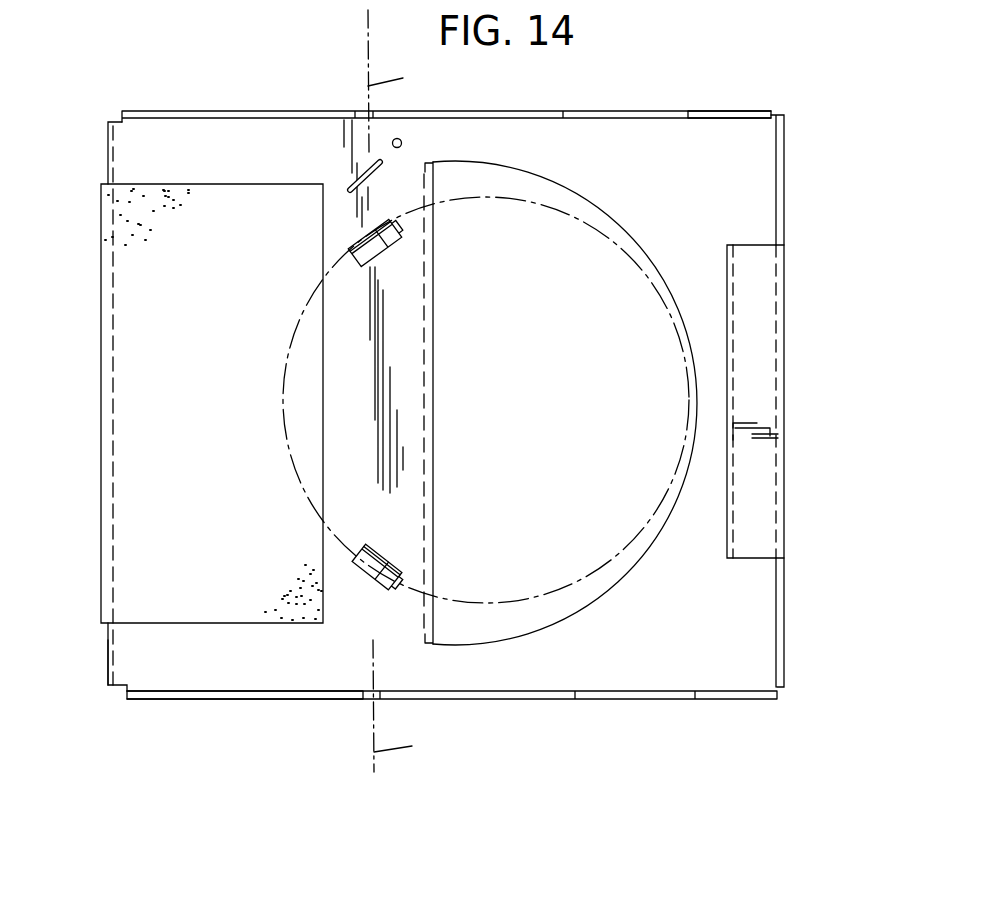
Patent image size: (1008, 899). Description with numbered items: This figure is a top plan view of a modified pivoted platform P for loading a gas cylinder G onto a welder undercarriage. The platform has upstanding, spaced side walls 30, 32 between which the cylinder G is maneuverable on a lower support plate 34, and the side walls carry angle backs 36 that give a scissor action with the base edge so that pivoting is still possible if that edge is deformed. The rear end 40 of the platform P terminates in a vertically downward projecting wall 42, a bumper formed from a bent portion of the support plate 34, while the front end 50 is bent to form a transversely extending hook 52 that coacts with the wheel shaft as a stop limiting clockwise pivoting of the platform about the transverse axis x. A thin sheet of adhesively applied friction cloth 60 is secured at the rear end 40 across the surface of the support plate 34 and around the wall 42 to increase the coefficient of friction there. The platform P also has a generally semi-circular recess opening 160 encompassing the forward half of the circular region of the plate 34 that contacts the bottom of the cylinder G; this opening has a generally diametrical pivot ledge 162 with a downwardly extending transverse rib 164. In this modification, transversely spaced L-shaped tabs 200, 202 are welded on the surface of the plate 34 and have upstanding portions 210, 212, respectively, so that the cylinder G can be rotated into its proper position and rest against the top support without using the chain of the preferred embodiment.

The side wall 30 is at (515, 700).
The side wall 32 is at (278, 108).
The lower support plate 34 is at (232, 673).
The angle backs 36 is at (740, 109).
The rear end 40 is at (104, 136).
The downward projecting wall 42 is at (107, 657).
The front end 50 is at (786, 640).
The hook 52 is at (765, 523).
The friction cloth 60 is at (123, 542).
The recess opening 160 is at (583, 597).
The pivot ledge 162 is at (436, 380).
The transverse rib 164 is at (440, 445).
The L-shaped tab 200 is at (382, 250).
The L-shaped tab 202 is at (387, 562).
The upstanding portion 210 is at (350, 242).
The upstanding portion 212 is at (362, 580).
The cylinder G is at (592, 238).
The pivoted platform P is at (639, 703).
The transverse axis x is at (398, 391).